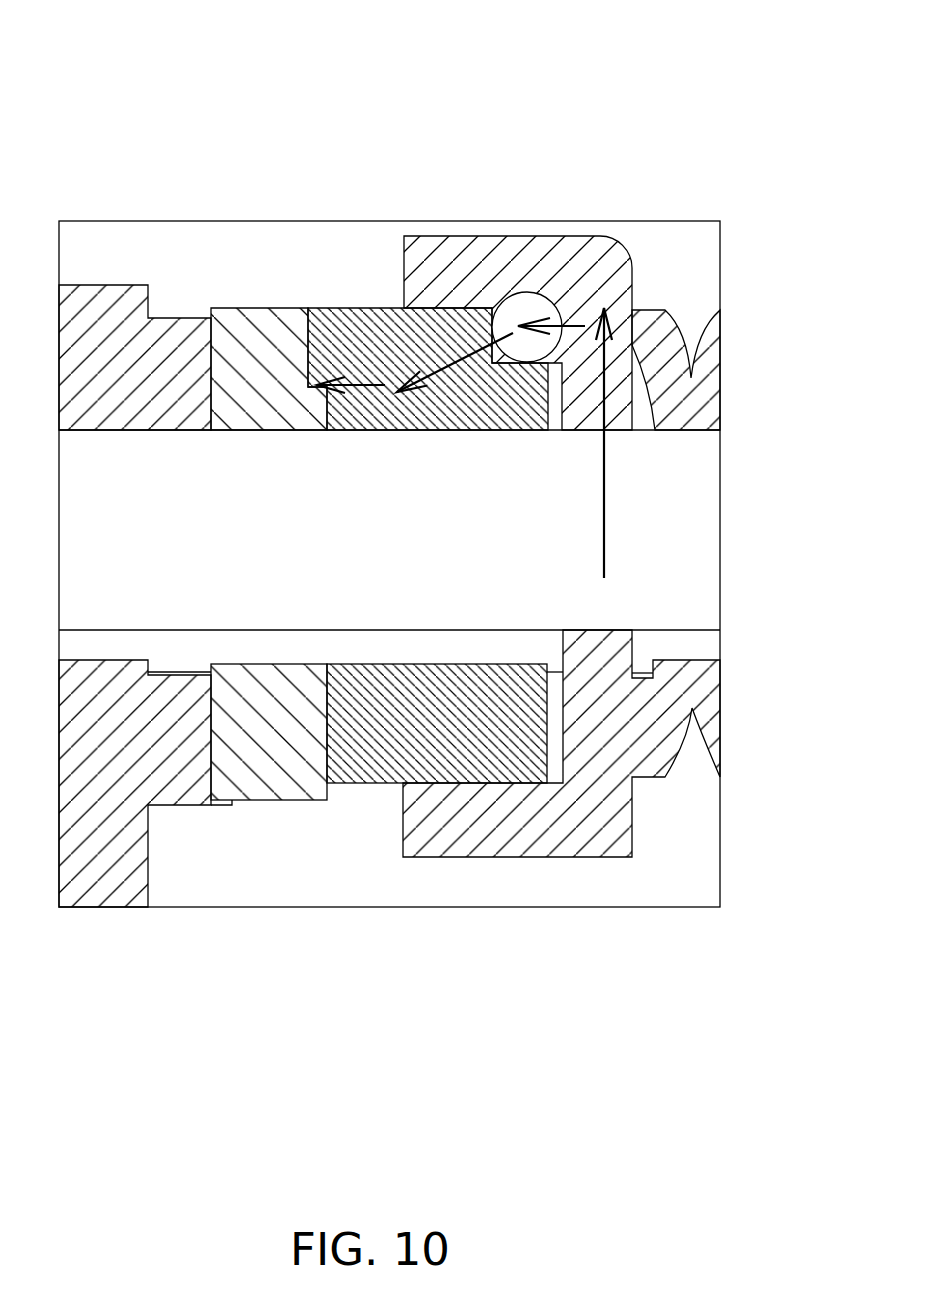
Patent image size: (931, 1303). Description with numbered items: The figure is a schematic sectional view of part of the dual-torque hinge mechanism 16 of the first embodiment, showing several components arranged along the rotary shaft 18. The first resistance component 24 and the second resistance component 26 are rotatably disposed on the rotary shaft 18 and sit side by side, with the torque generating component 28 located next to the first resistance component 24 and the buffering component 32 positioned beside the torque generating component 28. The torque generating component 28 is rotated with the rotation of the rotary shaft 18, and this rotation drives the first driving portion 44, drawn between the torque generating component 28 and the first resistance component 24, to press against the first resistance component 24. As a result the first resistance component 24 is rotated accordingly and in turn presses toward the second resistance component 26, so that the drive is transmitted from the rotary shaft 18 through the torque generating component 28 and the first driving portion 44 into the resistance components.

The dual-torque hinge mechanism 16 is at (643, 100).
The rotary shaft 18 is at (657, 545).
The first resistance component 24 is at (343, 330).
The second resistance component 26 is at (248, 330).
The torque generating component 28 is at (438, 265).
The buffering component 32 is at (683, 390).
The first driving portion 44 is at (527, 310).